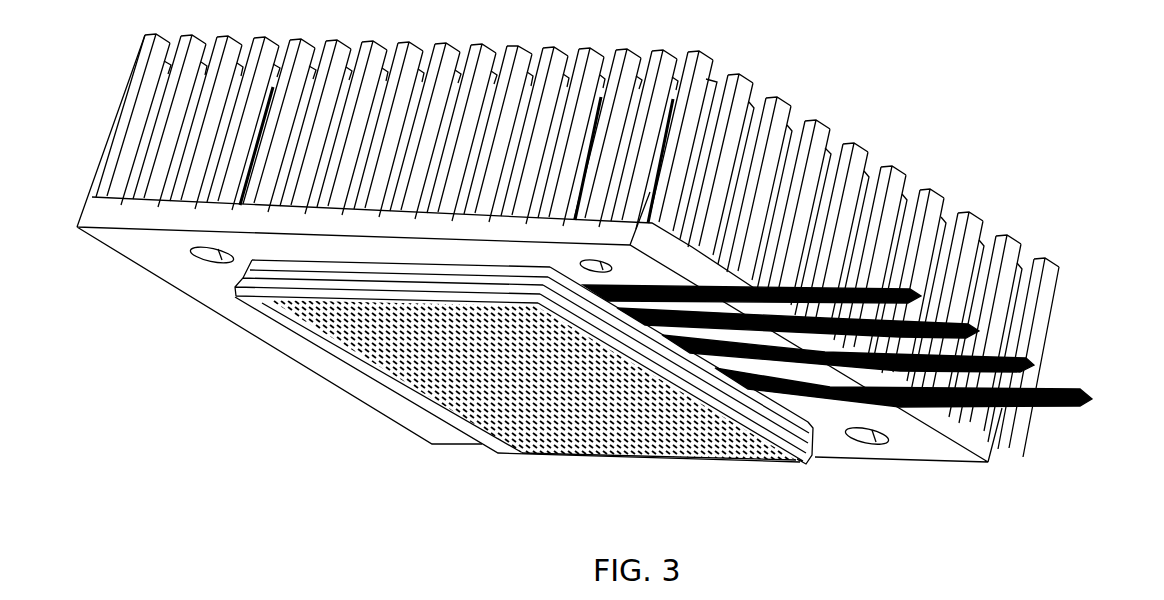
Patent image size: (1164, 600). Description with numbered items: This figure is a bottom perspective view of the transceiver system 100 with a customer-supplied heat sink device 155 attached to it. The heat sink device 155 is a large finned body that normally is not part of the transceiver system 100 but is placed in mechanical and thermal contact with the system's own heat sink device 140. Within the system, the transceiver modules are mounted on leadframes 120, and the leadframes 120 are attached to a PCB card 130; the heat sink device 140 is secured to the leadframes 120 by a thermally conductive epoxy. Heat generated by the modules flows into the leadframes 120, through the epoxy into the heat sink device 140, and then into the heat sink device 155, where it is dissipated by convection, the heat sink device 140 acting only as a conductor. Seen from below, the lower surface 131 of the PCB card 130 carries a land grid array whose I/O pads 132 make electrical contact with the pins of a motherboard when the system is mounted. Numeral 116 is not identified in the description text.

The transceiver system 100 is at (546, 510).
The cables 116 is at (1062, 403).
The leadframes 120 is at (348, 278).
The PCB card 130 is at (262, 292).
The lower surface of the PCB card 131 is at (772, 452).
The I/O pads 132 is at (648, 452).
The heat sink device 140 is at (437, 273).
The heat sink device 155 is at (127, 240).